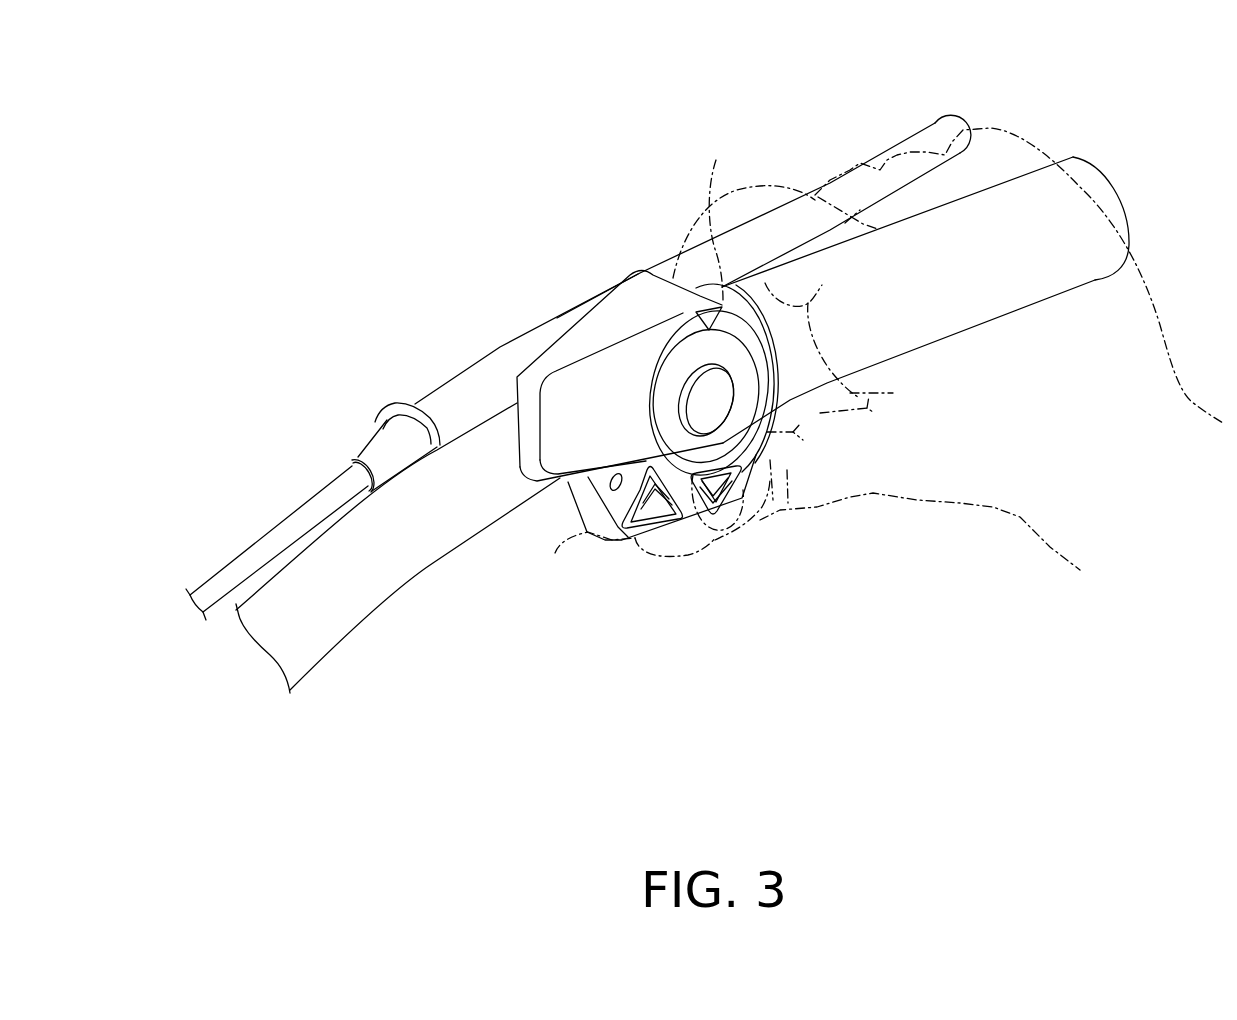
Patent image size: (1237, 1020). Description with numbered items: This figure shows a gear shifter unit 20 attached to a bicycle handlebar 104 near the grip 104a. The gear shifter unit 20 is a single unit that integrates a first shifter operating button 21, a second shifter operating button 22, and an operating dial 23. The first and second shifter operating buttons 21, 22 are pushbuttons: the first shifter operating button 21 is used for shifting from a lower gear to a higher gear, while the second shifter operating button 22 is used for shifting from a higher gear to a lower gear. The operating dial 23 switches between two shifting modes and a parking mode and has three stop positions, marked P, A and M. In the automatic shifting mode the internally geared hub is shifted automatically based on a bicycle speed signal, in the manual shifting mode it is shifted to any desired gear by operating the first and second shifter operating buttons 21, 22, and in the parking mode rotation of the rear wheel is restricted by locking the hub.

The handlebar 104 is at (317, 538).
The grip 104a is at (1040, 188).
The gear shifter unit 20 is at (563, 338).
The first shifter operating button 21 is at (601, 513).
The second shifter operating button 22 is at (720, 513).
The operating dial 23 is at (720, 303).